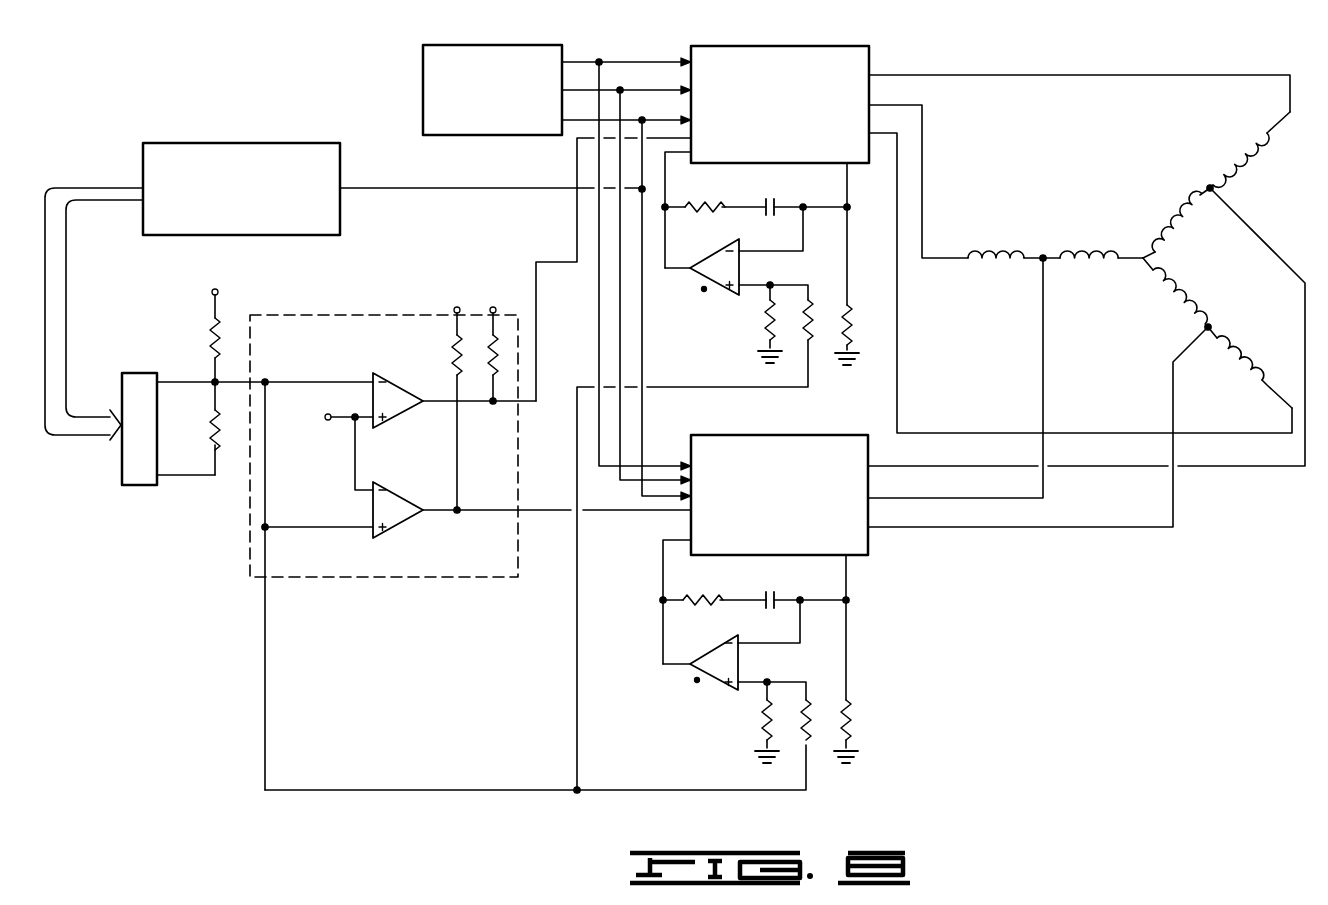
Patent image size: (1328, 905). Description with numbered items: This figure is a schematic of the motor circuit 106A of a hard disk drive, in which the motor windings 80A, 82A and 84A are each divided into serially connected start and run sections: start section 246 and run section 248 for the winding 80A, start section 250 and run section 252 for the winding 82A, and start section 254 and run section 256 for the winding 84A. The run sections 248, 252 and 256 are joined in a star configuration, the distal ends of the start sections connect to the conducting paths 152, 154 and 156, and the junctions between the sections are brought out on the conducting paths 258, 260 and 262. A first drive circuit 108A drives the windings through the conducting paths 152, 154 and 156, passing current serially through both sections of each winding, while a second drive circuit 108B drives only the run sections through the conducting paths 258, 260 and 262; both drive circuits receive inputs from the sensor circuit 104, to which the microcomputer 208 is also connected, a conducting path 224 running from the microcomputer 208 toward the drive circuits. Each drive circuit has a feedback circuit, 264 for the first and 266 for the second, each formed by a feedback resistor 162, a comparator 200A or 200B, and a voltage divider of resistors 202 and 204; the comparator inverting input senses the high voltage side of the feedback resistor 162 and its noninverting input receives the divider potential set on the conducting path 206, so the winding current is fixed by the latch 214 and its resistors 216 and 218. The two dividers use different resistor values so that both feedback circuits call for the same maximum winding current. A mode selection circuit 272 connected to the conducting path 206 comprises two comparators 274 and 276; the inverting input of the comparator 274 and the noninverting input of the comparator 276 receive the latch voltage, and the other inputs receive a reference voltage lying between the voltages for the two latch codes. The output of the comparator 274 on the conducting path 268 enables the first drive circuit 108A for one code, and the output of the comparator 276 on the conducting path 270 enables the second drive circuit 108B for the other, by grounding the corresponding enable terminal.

The sensor circuit 104 is at (428, 62).
The microcomputer 208 is at (330, 168).
The enable line 224 is at (455, 192).
The conducting path 268 is at (577, 232).
The first drive circuit 108A is at (852, 58).
The second drive circuit 108B is at (750, 443).
The motor circuit 106A is at (1160, 56).
The conducting path 152 is at (983, 77).
The conducting path 154 is at (925, 143).
The conducting path 156 is at (898, 175).
The motor winding 80A is at (1222, 151).
The motor winding 84A is at (1095, 251).
The motor winding 82A is at (1217, 333).
The start section 246 is at (1248, 160).
The run section 248 is at (1170, 228).
The run section 252 is at (1176, 300).
The start section 250 is at (1255, 380).
The start section 254 is at (975, 262).
The run section 256 is at (1085, 262).
The conducting path 258 is at (897, 470).
The conducting path 260 is at (899, 500).
The conducting path 262 is at (902, 528).
The comparator 200A is at (722, 277).
The comparator 200B is at (718, 678).
The feedback circuit 264 is at (704, 289).
The feedback circuit 266 is at (697, 680).
The resistor 202 is at (765, 330).
The resistor 204 is at (812, 335).
The feedback resistor 162 is at (855, 330).
The latch 214 is at (143, 486).
The resistor 216 is at (212, 322).
The resistor 218 is at (212, 425).
The conducting path 206 is at (246, 382).
The mode selection circuit 272 is at (470, 464).
The comparator 274 is at (408, 395).
The comparator 276 is at (392, 497).
The conducting path 270 is at (457, 512).